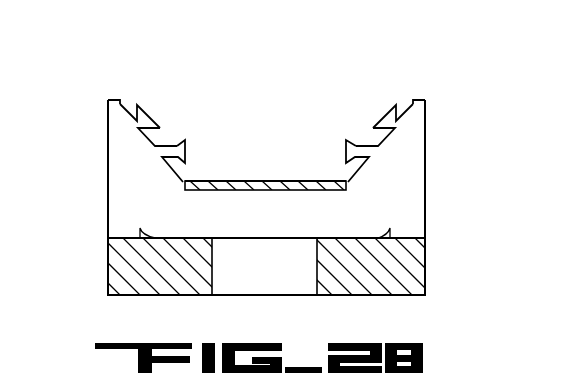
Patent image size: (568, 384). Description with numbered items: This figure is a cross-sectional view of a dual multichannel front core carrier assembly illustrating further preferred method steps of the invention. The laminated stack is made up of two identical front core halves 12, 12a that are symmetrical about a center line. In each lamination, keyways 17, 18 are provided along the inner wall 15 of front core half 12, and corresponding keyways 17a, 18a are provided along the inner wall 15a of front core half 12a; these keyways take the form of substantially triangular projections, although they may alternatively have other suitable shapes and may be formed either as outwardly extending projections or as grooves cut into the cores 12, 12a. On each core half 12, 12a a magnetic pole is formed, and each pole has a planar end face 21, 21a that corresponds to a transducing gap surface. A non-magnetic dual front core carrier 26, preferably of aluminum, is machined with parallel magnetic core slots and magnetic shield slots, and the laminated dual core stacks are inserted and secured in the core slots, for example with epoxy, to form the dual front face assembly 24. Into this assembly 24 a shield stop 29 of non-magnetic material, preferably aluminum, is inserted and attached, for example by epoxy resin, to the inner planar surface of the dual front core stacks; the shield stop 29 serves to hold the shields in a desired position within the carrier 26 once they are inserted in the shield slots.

The dual front face assembly 24 is at (168, 91).
The planar end face 21 is at (114, 98).
The planar end face 21a is at (420, 100).
The keyway 17 is at (147, 118).
The keyway 17a is at (386, 118).
The inner wall 15 is at (145, 133).
The inner wall 15a is at (383, 137).
The keyway 18 is at (187, 153).
The keyway 18a is at (348, 153).
The front core half 12 is at (115, 185).
The front core half 12a is at (420, 187).
The shield stop 29 is at (285, 191).
The dual front core carrier 26 is at (418, 269).